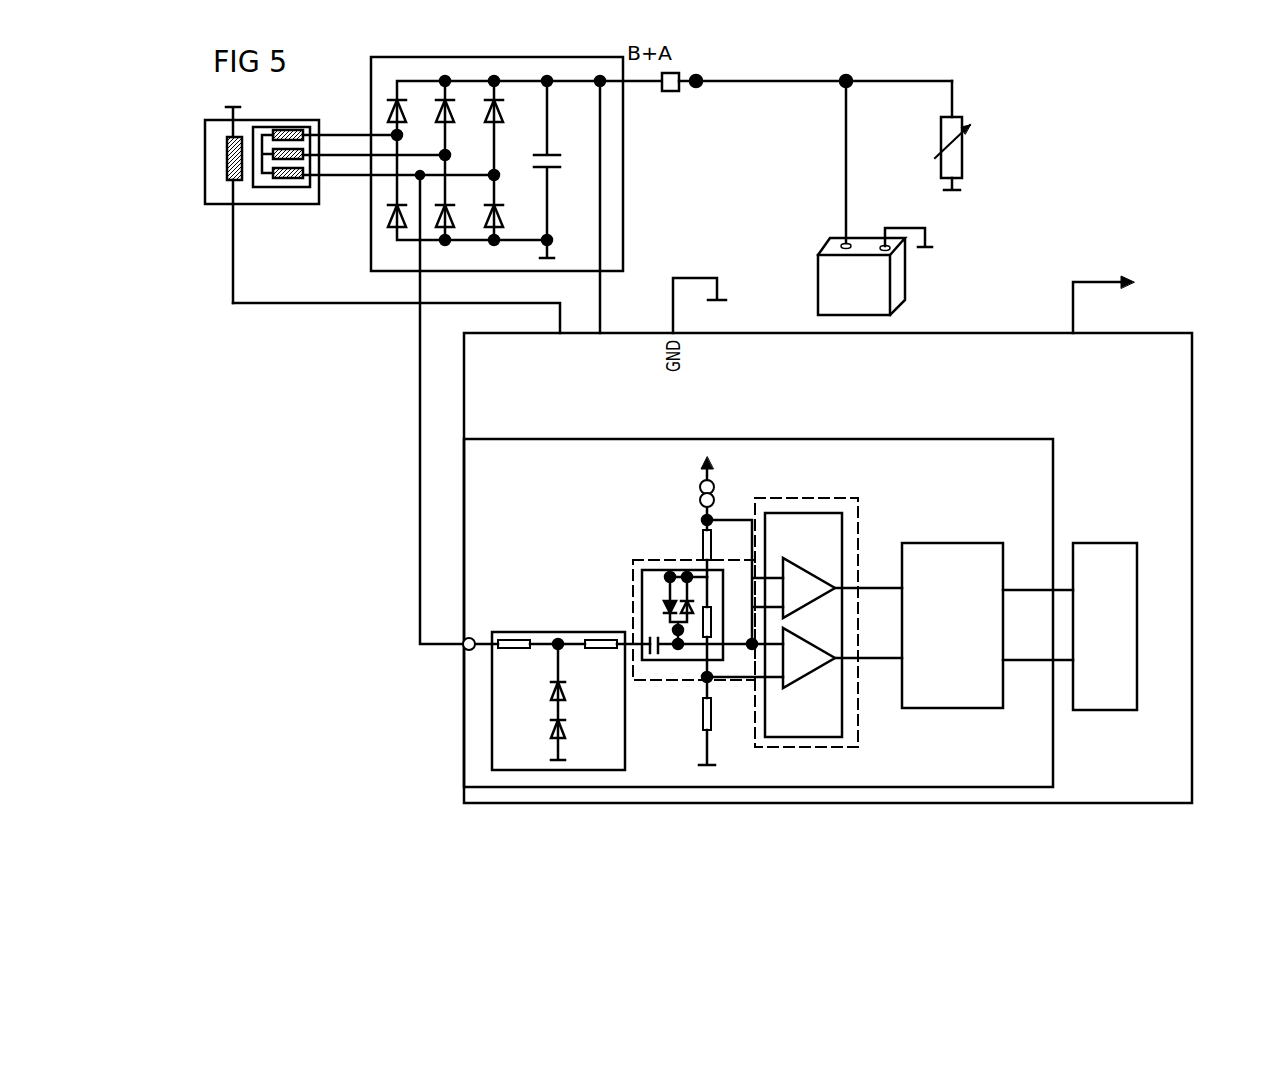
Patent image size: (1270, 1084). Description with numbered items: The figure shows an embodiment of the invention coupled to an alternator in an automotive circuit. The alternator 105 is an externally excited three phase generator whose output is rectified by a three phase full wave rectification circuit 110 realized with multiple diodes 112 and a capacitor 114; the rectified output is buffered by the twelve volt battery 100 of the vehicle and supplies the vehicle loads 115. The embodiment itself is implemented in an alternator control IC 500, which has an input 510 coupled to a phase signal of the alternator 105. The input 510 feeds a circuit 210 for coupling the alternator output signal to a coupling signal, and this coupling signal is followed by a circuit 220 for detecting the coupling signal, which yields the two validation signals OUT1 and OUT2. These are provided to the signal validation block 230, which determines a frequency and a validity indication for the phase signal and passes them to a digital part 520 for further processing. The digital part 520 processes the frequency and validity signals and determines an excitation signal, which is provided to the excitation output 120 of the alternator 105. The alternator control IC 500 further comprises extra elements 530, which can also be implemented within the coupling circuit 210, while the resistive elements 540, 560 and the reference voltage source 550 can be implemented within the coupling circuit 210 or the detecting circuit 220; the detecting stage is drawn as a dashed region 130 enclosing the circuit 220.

The battery 100 is at (905, 307).
The alternator 105 is at (319, 204).
The rectification circuit 110 is at (623, 248).
The diodes 112 is at (452, 124).
The capacitor 114 is at (547, 160).
The vehicle loads 115 is at (962, 178).
The connection to an excitation signal 120 is at (295, 305).
The comparator stage 130 is at (858, 498).
The circuit for coupling the alternator output signal 210 is at (723, 610).
The circuit for detecting the coupling signal 220 is at (842, 740).
The signal validation block 230 is at (1003, 708).
The alternator control IC 500 is at (1192, 760).
The input 510 is at (415, 644).
The digital part 520 is at (1137, 710).
The extra elements 530 is at (625, 697).
The resistive element 540 is at (703, 728).
The reference voltage source 550 is at (698, 495).
The resistive element 560 is at (703, 545).